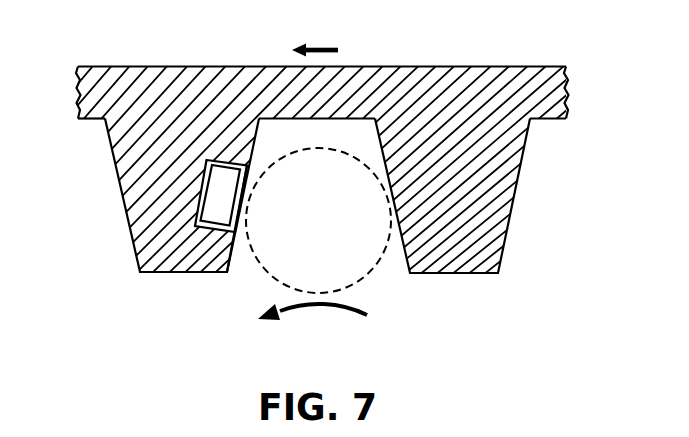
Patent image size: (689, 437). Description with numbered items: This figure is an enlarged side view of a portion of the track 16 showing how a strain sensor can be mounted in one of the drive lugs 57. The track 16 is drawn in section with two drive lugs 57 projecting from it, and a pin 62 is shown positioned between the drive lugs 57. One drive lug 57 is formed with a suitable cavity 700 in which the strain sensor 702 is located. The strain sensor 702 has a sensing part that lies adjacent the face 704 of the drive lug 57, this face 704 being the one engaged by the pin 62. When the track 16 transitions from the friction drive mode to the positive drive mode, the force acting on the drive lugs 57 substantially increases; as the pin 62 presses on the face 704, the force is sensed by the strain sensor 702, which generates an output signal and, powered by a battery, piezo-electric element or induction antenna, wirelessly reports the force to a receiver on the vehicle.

The track 16 is at (468, 66).
The drive lug 57 is at (178, 262).
The pin 62 is at (330, 234).
The cavity 700 is at (203, 172).
The strain sensor 702 is at (214, 207).
The face 704 is at (231, 246).